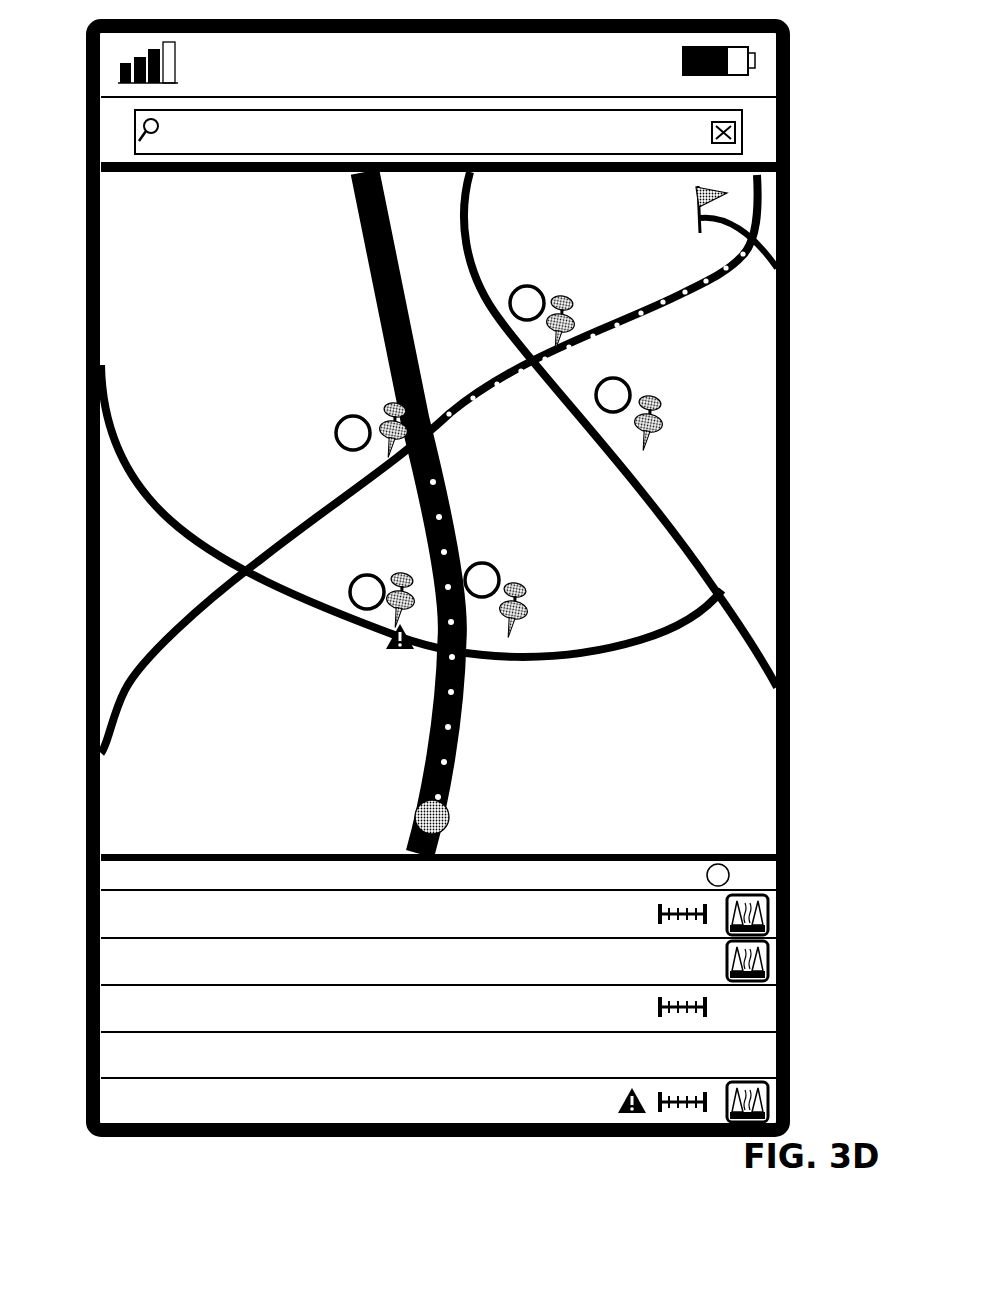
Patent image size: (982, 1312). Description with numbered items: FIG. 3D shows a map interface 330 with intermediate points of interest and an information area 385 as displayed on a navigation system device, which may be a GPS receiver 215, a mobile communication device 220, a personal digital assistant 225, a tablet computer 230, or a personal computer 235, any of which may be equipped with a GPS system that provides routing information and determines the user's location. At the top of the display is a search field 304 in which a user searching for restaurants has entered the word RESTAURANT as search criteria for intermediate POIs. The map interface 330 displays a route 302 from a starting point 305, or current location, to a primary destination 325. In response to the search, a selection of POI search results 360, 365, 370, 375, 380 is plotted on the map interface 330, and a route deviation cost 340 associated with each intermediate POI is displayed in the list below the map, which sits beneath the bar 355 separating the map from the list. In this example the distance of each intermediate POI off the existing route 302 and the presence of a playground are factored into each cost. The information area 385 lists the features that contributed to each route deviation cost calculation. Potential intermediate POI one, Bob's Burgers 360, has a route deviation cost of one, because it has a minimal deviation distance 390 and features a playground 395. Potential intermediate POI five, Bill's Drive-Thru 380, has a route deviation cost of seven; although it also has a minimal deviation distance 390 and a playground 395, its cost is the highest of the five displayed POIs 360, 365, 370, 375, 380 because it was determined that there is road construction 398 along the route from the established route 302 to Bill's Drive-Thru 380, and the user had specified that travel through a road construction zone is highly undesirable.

The Global Positioning System (GPS) receiver 215 is at (447, 595).
The mobile communication device 220 is at (447, 598).
The Personal Digital Assistant (PDA) 225 is at (447, 598).
The tablet computer 230 is at (447, 598).
The personal computer 235 is at (814, 178).
The search field 304 is at (360, 140).
The primary destination 325 is at (778, 268).
The map interface 330 is at (114, 240).
The route 302 is at (438, 463).
The starting point 305 is at (412, 812).
The route deviation cost 340 is at (480, 856).
The list header bar 355 is at (113, 853).
The POI search result 360 is at (385, 420).
The POI search result 365 is at (508, 577).
The POI search result 370 is at (562, 300).
The POI search result 375 is at (645, 405).
The POI search result 380 is at (399, 578).
The information area 385 is at (716, 858).
The minimal deviation distance 390 is at (667, 902).
The playground 395 is at (760, 897).
The road construction 398 is at (623, 1112).